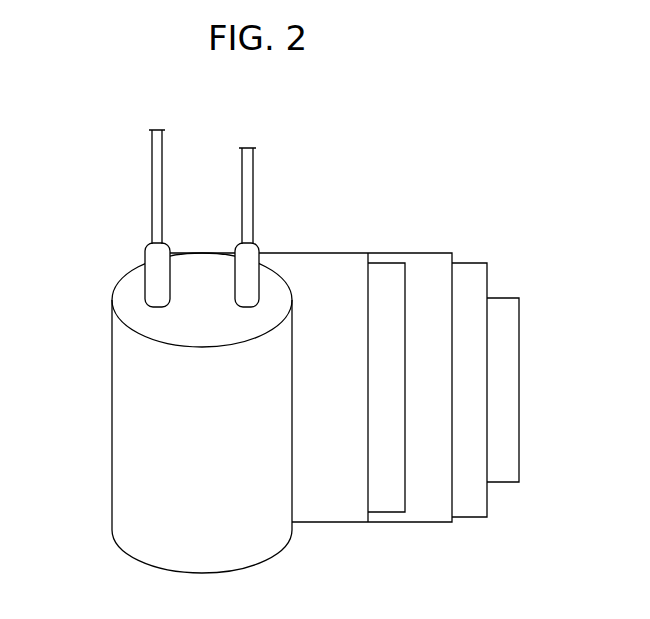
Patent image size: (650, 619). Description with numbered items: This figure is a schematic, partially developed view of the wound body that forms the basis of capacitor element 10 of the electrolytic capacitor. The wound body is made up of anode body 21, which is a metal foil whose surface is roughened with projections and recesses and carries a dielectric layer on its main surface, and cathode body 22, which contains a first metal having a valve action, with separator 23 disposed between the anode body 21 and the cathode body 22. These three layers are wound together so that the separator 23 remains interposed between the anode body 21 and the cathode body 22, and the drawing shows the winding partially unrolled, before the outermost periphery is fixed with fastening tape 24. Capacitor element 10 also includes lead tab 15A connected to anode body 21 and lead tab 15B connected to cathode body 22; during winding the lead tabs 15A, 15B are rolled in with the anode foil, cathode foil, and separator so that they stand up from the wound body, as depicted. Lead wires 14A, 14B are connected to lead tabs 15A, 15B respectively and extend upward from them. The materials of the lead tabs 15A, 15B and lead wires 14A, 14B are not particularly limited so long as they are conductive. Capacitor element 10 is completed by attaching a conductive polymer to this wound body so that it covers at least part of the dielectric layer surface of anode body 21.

The capacitor element 10 is at (367, 133).
The lead wire 14A is at (155, 163).
The lead wire 14B is at (250, 158).
The lead tab 15A is at (155, 262).
The lead tab 15B is at (257, 252).
The anode body 21 is at (394, 493).
The cathode body 22 is at (470, 508).
The separator 23 is at (340, 493).
The fastening tape 24 is at (502, 472).